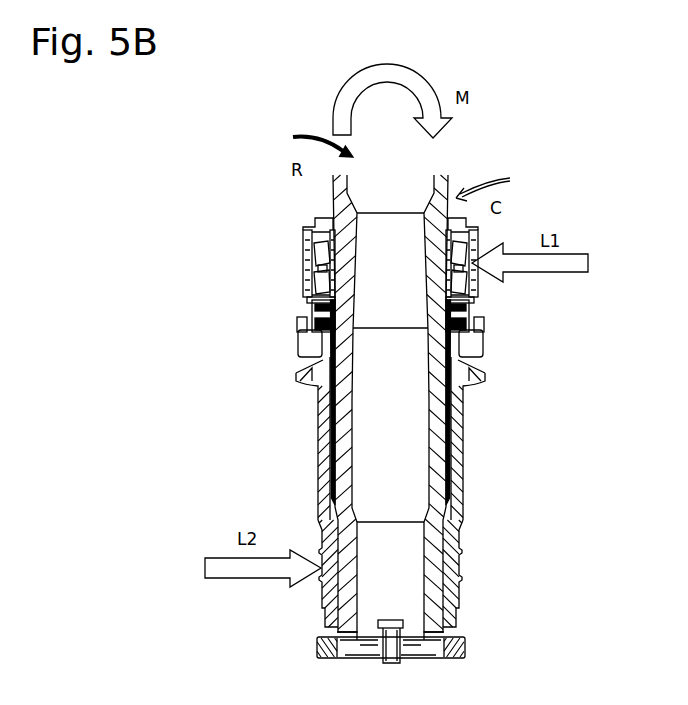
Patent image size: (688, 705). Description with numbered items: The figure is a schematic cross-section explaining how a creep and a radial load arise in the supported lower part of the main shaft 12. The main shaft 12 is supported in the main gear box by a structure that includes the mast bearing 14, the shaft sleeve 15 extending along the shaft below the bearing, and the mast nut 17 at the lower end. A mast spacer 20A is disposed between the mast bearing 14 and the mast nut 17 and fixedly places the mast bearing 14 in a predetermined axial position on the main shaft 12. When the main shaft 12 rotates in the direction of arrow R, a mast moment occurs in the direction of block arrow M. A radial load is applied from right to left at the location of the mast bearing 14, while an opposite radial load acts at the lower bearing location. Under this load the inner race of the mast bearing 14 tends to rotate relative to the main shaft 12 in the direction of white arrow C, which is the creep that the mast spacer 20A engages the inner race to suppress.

The main shaft 12 is at (325, 417).
The mast bearing 14 is at (308, 280).
The shaft sleeve 15 is at (465, 523).
The mast nut 17 is at (467, 647).
The mast spacer 20A is at (463, 339).